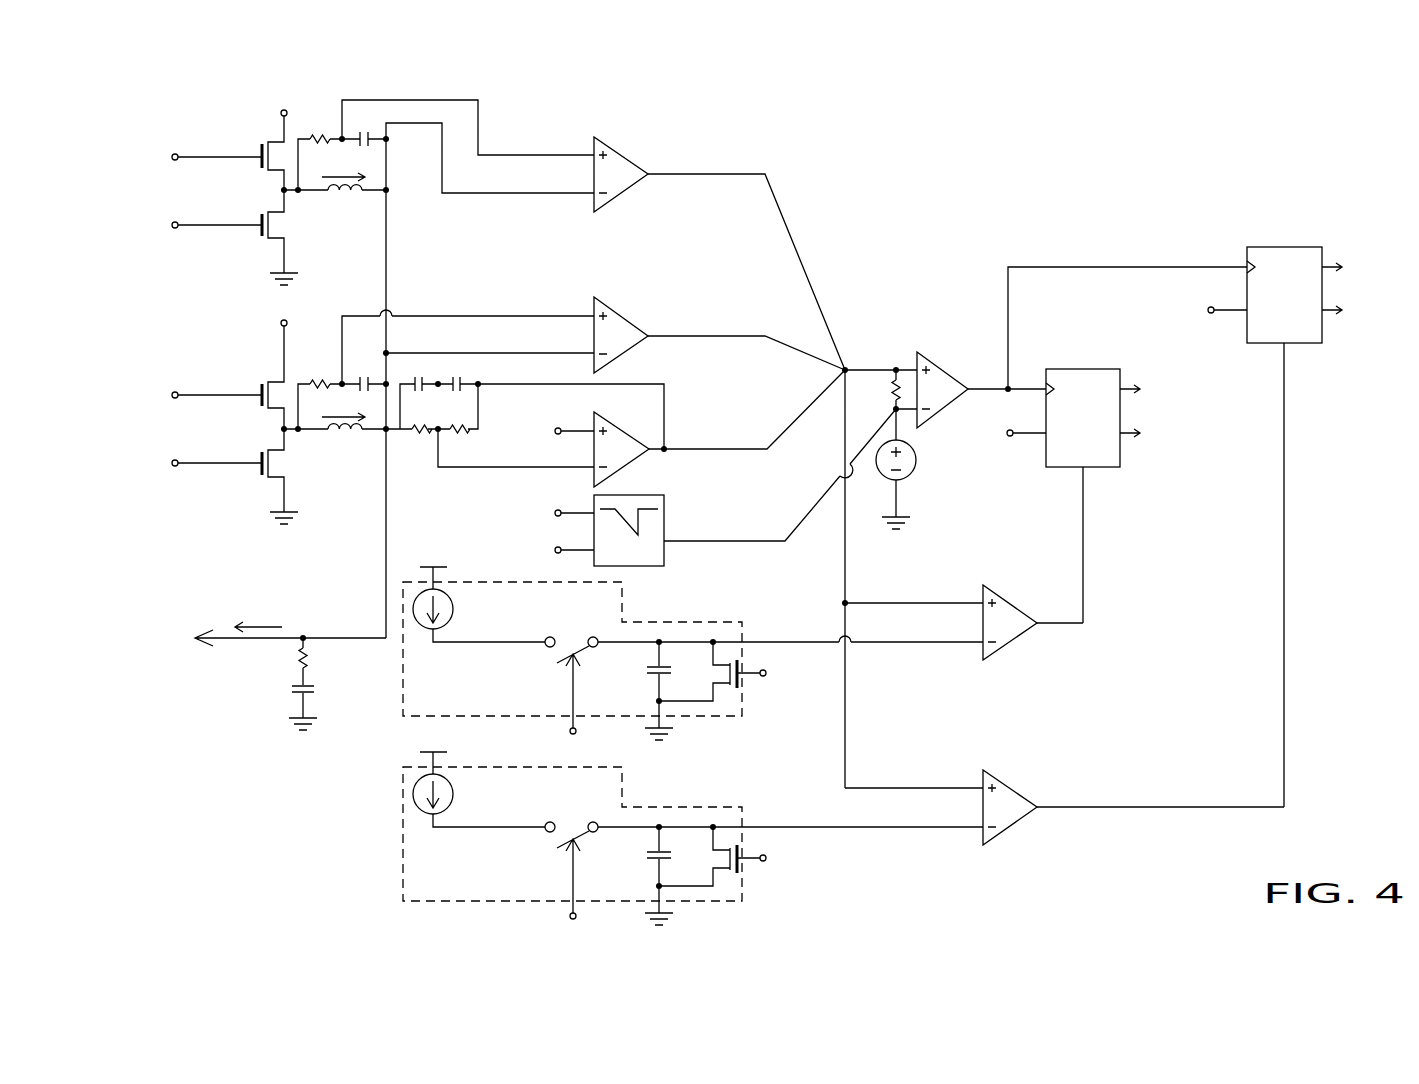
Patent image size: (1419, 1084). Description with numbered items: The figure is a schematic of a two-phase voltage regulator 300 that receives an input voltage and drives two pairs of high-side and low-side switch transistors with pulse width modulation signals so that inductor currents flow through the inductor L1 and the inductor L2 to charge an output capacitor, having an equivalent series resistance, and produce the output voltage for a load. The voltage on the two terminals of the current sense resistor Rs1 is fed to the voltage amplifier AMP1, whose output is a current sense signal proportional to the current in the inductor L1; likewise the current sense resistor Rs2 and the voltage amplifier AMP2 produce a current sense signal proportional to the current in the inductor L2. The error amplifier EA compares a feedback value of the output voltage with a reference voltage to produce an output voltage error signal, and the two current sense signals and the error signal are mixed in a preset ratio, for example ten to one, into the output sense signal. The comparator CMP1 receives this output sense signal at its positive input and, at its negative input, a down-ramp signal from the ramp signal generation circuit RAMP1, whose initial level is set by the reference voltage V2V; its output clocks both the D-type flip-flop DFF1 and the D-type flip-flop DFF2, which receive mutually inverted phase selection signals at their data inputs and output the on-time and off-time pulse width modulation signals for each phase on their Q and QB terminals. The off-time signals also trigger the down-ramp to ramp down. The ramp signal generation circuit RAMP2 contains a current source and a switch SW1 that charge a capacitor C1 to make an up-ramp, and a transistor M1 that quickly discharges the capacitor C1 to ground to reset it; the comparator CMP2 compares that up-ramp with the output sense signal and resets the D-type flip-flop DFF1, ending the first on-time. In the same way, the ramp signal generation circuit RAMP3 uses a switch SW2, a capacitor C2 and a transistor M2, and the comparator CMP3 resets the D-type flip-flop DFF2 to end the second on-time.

The voltage regulator 300 is at (757, 113).
The inductor L1 is at (345, 442).
The inductor L2 is at (345, 203).
The current sense resistor Rs1 is at (321, 371).
The current sense resistor Rs2 is at (321, 126).
The voltage amplifier AMP1 is at (620, 319).
The voltage amplifier AMP2 is at (620, 159).
The error amplifier EA is at (621, 449).
The ramp signal generation circuit RAMP1 is at (629, 530).
The ramp signal generation circuit RAMP2 is at (693, 620).
The ramp signal generation circuit RAMP3 is at (619, 823).
The comparator CMP1 is at (940, 372).
The comparator CMP2 is at (1007, 604).
The comparator CMP3 is at (1007, 790).
The D-type flip-flop DFF1 is at (1093, 400).
The D-type flip-flop DFF2 is at (1294, 278).
The reference voltage V2V is at (918, 484).
The switch SW1 is at (571, 666).
The switch SW2 is at (571, 851).
The capacitor C1 is at (646, 691).
The capacitor C2 is at (646, 876).
The transistor M1 is at (712, 671).
The transistor M2 is at (712, 856).